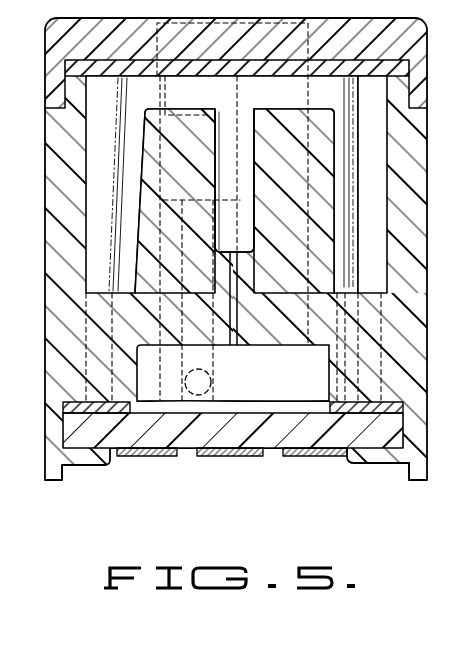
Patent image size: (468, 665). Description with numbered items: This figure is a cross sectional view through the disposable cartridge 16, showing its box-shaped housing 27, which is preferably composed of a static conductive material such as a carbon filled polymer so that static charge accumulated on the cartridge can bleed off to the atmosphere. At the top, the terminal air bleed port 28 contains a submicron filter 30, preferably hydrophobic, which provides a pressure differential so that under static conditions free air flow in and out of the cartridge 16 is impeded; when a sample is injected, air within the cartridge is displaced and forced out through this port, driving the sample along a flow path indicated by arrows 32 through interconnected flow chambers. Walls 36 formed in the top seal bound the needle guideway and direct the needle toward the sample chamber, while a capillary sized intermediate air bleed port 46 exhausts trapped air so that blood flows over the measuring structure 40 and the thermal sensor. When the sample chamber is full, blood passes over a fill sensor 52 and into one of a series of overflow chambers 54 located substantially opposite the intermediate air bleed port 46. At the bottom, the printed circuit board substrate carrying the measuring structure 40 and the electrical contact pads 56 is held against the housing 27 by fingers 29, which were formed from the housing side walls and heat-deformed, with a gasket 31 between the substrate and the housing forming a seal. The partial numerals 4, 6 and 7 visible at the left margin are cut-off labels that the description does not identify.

The cover plate 4 is at (204, 79).
The housing portion 6 is at (5, 228).
The base portion 7 is at (5, 401).
The disposable cartridge 16 is at (37, 182).
The box-shaped housing 27 is at (43, 347).
The terminal air bleed port 28 is at (214, 388).
The fingers 29 is at (75, 466).
The submicron filter 30 is at (291, 187).
The gasket 31 is at (97, 410).
The flow path arrows 32 is at (139, 95).
The walls 36 is at (175, 187).
The measuring structure 40 is at (280, 397).
The intermediate air bleed port 46 is at (234, 227).
The fill sensor 52 is at (369, 283).
The overflow chambers 54 is at (109, 170).
The electrical contact pads 56 is at (249, 457).